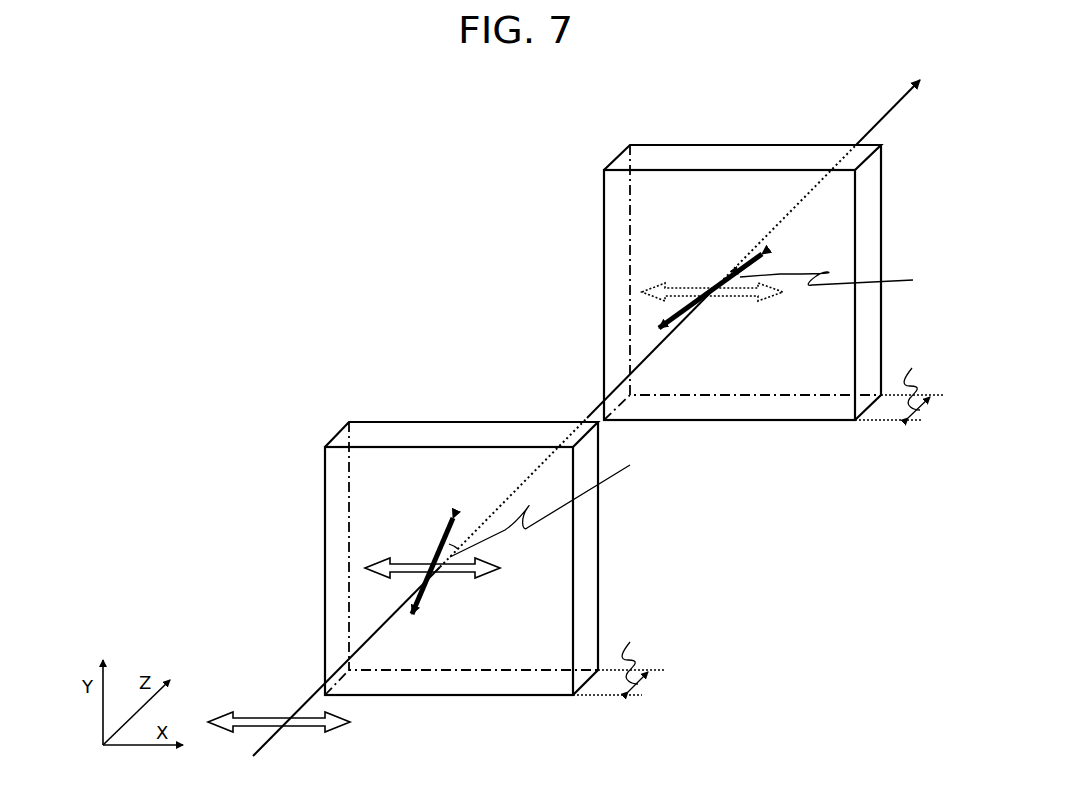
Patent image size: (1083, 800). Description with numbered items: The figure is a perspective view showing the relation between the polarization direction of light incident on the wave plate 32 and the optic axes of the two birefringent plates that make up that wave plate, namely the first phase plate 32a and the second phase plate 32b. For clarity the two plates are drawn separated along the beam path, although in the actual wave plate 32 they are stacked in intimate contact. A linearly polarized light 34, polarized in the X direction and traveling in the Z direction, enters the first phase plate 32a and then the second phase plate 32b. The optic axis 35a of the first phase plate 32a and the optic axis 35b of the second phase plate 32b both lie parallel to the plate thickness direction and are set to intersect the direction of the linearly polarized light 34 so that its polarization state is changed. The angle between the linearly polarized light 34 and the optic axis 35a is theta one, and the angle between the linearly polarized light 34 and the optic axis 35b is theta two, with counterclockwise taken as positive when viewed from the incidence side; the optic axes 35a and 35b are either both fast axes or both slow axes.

The wave plate 32 is at (549, 124).
The first phase plate 32a is at (324, 497).
The second phase plate 32b is at (604, 263).
The linearly polarized light 34 is at (493, 572).
The optic axis of the first phase plate 35a is at (433, 587).
The optic axis of the second phase plate 35b is at (765, 248).